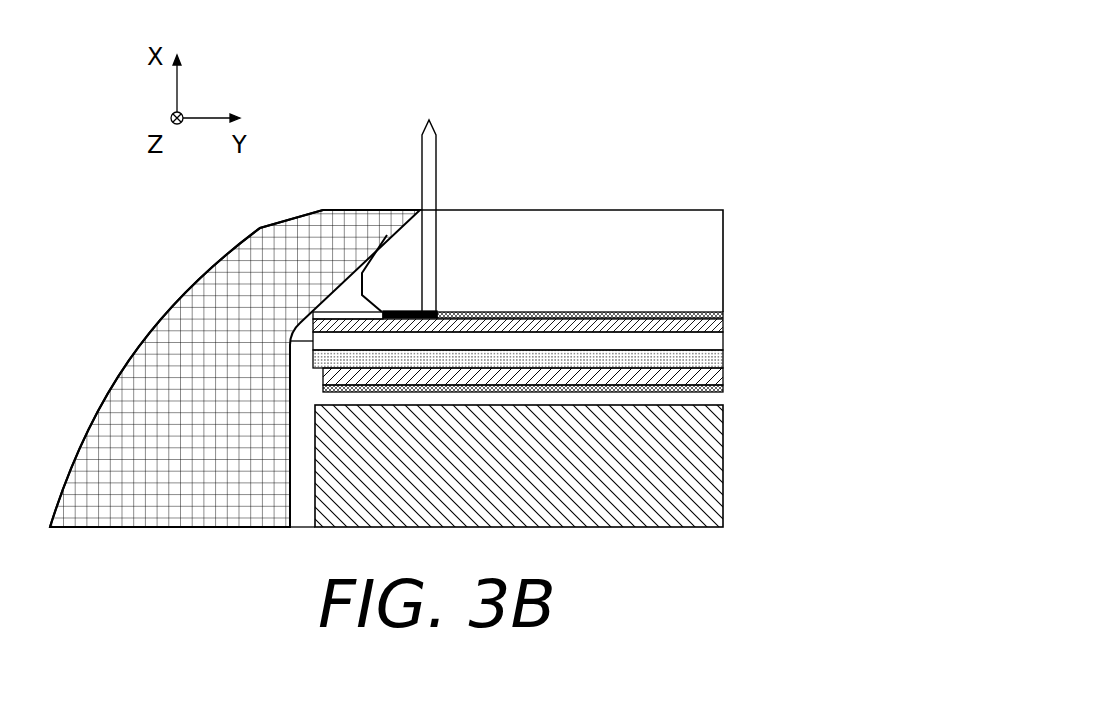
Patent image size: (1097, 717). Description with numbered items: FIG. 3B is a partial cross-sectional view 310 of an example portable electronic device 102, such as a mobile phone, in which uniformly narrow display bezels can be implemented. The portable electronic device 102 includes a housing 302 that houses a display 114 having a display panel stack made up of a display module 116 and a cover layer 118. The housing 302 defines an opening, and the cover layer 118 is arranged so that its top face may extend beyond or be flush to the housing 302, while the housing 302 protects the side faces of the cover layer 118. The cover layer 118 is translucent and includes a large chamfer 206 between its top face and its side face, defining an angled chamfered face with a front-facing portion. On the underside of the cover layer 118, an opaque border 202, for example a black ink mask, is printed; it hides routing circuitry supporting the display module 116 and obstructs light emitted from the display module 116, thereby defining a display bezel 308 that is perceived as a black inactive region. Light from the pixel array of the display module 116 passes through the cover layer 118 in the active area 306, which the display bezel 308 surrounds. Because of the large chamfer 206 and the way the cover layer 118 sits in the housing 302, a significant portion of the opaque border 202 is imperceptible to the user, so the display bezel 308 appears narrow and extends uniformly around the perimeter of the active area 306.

The portable electronic device 102 is at (177, 300).
The housing 302 is at (165, 352).
The display 114 is at (596, 301).
The display module 116 is at (556, 352).
The cover layer 118 is at (735, 210).
The opaque border 202 is at (408, 312).
The large chamfer 206 is at (372, 262).
The active area 306 is at (727, 210).
The display bezel 308 is at (429, 120).
The cross-sectional view of device 310 is at (694, 54).